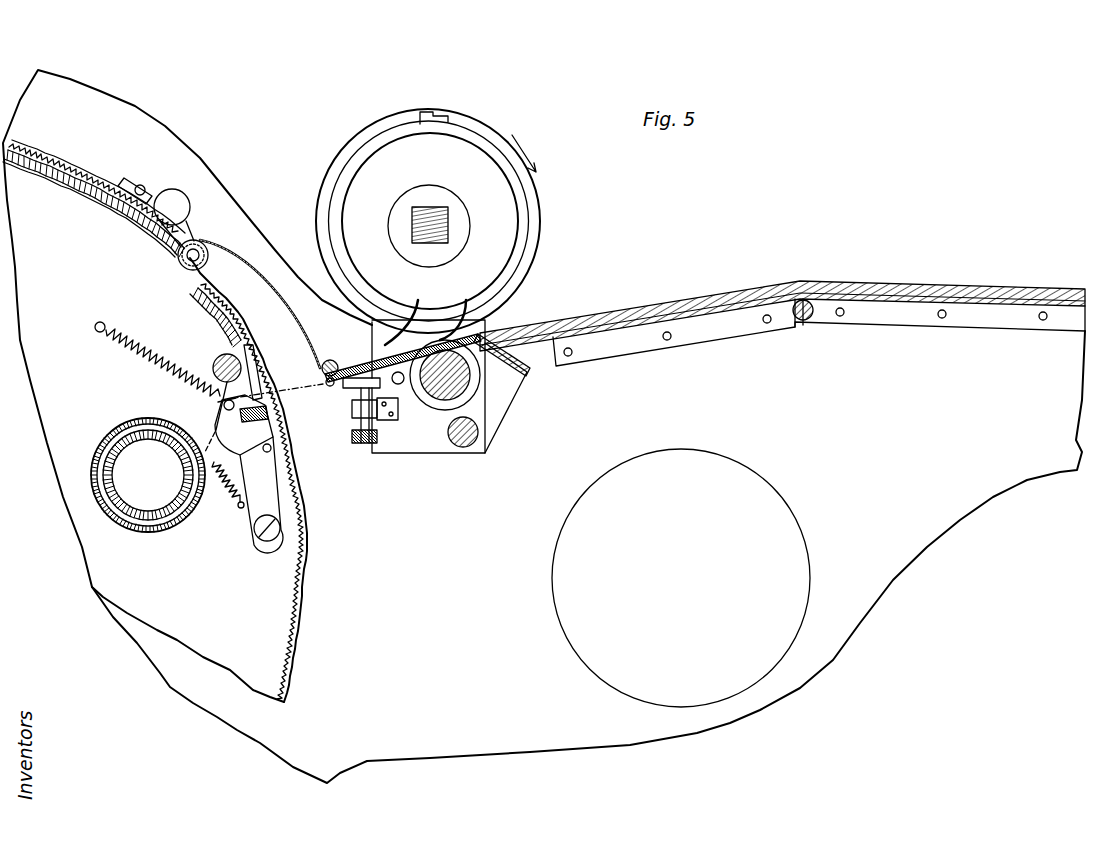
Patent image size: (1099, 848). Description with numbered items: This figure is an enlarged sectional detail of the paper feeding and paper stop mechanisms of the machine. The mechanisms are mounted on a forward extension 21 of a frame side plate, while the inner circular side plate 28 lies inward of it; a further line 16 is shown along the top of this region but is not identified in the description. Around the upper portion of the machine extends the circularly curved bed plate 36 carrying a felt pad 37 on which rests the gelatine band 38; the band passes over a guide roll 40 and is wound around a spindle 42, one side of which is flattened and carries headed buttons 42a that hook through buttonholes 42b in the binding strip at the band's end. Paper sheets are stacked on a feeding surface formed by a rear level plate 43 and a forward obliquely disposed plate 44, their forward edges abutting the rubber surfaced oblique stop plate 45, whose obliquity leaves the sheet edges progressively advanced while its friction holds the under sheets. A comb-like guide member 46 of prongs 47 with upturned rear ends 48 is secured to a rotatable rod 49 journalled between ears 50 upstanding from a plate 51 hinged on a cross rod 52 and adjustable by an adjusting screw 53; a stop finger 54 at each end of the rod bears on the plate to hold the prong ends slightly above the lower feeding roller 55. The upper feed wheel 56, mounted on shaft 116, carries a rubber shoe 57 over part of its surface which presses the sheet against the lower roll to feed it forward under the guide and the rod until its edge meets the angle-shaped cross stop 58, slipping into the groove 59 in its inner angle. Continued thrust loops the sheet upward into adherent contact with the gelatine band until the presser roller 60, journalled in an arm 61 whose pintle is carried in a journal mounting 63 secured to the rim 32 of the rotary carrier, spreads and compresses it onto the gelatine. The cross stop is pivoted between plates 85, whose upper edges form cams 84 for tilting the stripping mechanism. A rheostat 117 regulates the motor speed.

The guide strip 16 is at (20, 148).
The rim 32 is at (55, 152).
The journal mounting 63 is at (135, 186).
The arm 61 is at (183, 212).
The rubber shoe 57 is at (323, 178).
The shaft 116 is at (424, 214).
The feed wheel 56 is at (531, 226).
The felt pad 37 is at (90, 203).
The bed plate 36 is at (124, 218).
The presser roller 60 is at (208, 262).
The prongs 47 is at (403, 313).
The upturned rear ends of prongs 48 is at (457, 307).
The comb-like guide member 46 is at (330, 352).
The stop finger 54 is at (377, 346).
The cam 84 is at (258, 352).
The ears 50 is at (328, 362).
The guide roll 40 is at (215, 360).
The rotatable rod 49 is at (312, 380).
The inner circular side plate 28 is at (134, 359).
The groove 59 is at (224, 405).
The cross stop 58 is at (240, 414).
The plate 51 is at (336, 390).
The adjusting screw 53 is at (358, 430).
The cross rod 52 is at (400, 390).
The lower feeding roller 55 is at (493, 405).
The stop plate 45 is at (526, 373).
The forward obliquely disposed plate 44 is at (692, 328).
The rear level plate 43 is at (885, 300).
The forward extension 21 is at (544, 426).
The headed buttons 42a is at (172, 430).
The buttonholes 42b is at (166, 438).
The spindle 42 is at (165, 530).
The gelatine band 38 is at (218, 455).
The plate 85 is at (272, 494).
The rheostat 117 is at (681, 578).